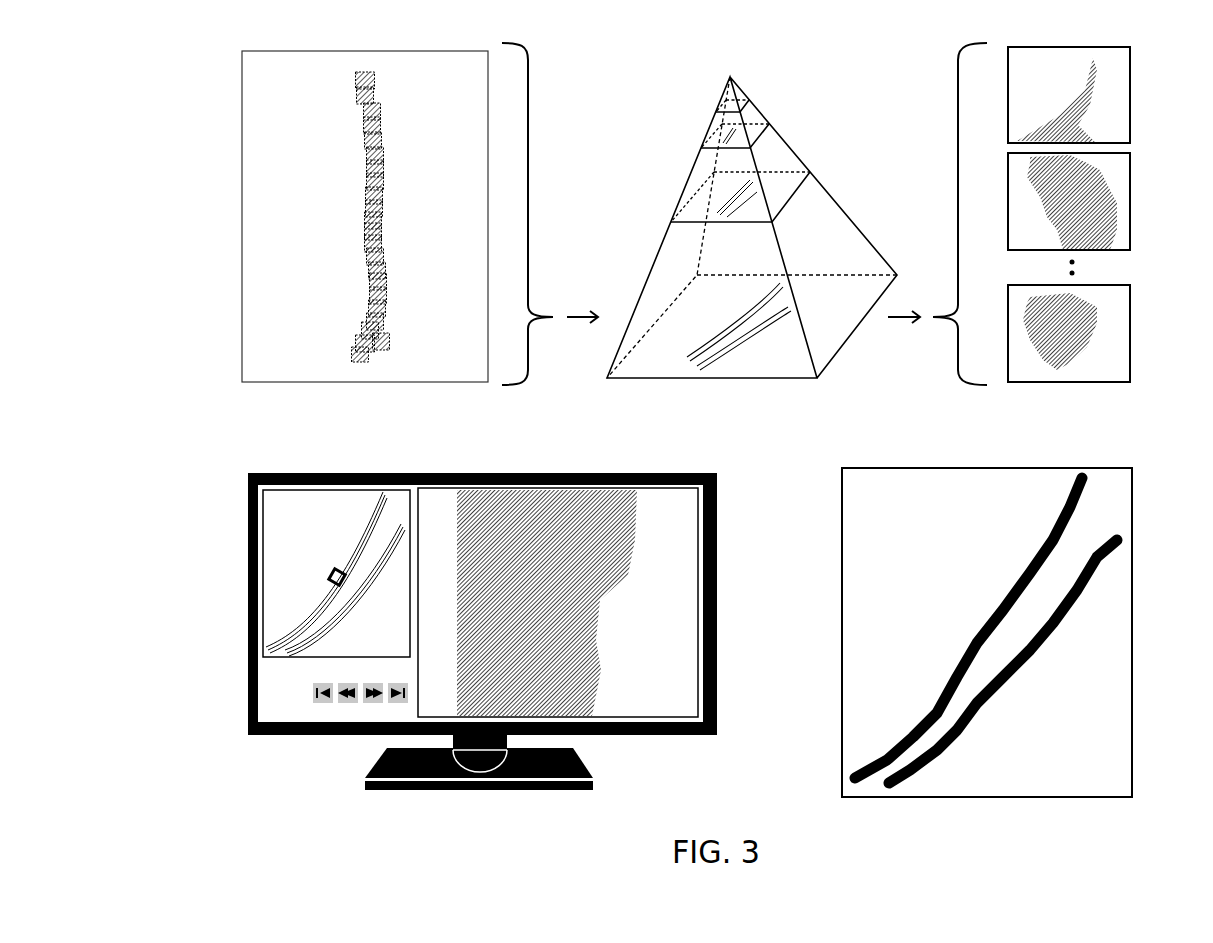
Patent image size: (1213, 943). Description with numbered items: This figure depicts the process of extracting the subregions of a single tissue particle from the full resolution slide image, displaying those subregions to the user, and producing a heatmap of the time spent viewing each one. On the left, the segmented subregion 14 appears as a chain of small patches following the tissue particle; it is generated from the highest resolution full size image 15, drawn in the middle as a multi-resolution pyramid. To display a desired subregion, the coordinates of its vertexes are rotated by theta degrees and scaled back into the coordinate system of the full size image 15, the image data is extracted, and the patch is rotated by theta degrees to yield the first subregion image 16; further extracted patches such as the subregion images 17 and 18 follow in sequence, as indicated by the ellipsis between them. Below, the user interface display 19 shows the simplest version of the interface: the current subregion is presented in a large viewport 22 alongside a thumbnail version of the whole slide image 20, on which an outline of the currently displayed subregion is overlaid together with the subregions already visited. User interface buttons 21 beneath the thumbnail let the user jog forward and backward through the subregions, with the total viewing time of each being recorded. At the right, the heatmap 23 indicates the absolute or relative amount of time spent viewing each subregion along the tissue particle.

The segmented subregion 14 is at (242, 62).
The full size image 15 is at (832, 353).
The first subregion image 16 is at (1130, 55).
The subregion image 17 is at (1130, 163).
The subregion image 18 is at (1130, 297).
The user interface display 19 is at (248, 505).
The thumbnail version of the whole slide image 20 is at (263, 648).
The user interface buttons 21 is at (362, 706).
The large viewport 22 is at (572, 493).
The heatmap 23 is at (842, 503).